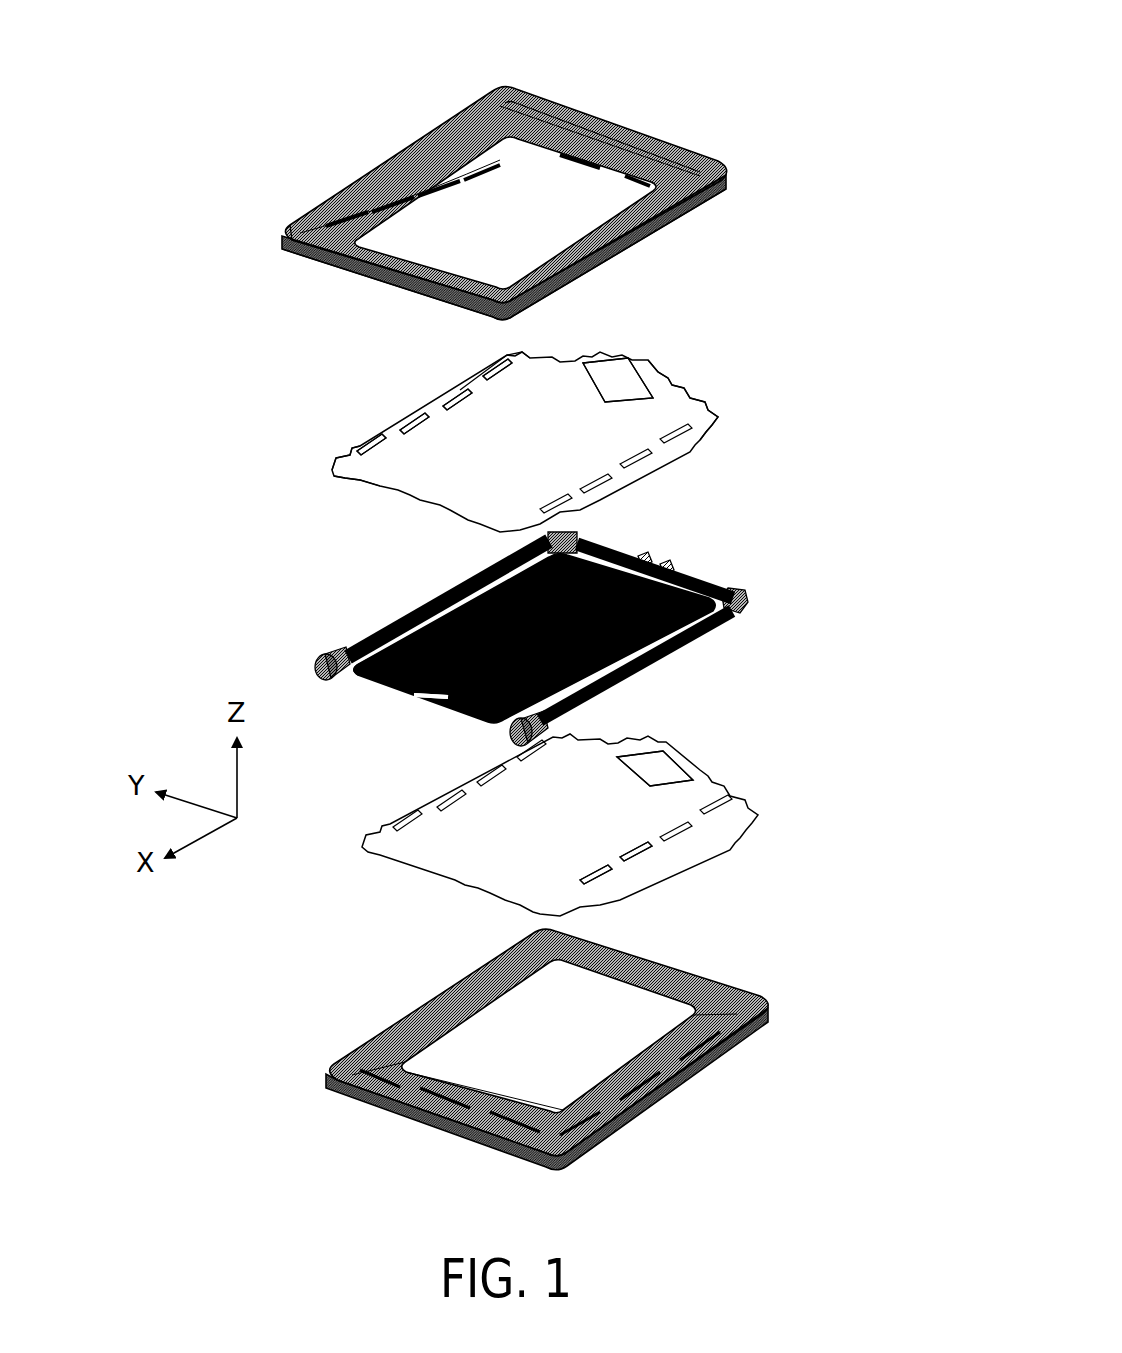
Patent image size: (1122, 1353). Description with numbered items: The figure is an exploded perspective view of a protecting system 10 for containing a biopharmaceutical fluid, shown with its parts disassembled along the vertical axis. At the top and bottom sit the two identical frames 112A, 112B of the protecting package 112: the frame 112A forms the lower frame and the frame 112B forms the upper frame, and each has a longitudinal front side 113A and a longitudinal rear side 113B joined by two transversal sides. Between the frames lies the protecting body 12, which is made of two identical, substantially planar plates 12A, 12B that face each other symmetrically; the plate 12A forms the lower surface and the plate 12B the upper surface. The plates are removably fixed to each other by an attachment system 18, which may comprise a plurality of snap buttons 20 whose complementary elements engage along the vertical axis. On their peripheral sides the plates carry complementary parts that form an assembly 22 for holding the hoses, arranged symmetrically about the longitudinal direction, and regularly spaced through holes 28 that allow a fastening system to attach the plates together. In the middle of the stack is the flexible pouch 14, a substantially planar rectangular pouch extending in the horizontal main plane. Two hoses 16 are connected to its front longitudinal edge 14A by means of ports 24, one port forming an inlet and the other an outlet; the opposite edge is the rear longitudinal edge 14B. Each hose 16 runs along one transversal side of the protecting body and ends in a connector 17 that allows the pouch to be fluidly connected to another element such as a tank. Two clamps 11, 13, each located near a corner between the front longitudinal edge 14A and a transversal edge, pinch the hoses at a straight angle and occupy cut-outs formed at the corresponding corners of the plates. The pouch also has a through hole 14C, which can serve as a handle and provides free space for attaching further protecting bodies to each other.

The protecting system 10 is at (350, 88).
The clamp 11 is at (563, 538).
The protecting body 12 is at (662, 412).
The plate 12A is at (605, 833).
The plate 12B is at (474, 440).
The clamp 13 is at (748, 598).
The flexible pouch 14 is at (534, 637).
The front longitudinal edge 14A is at (658, 567).
The rear longitudinal edge 14B is at (380, 685).
The through hole 14C is at (412, 684).
The hose 16 is at (673, 653).
The connector 17 is at (318, 660).
The attachment system 18 is at (354, 489).
The snap button 20 is at (516, 357).
The assembly for holding the hoses 22 is at (668, 380).
The port 24 is at (646, 562).
The through hole 28 is at (477, 388).
The protecting package 112 is at (353, 181).
The frame 112A is at (426, 1126).
The frame 112B is at (533, 85).
The longitudinal front side 113A is at (606, 122).
The longitudinal rear side 113B is at (388, 278).